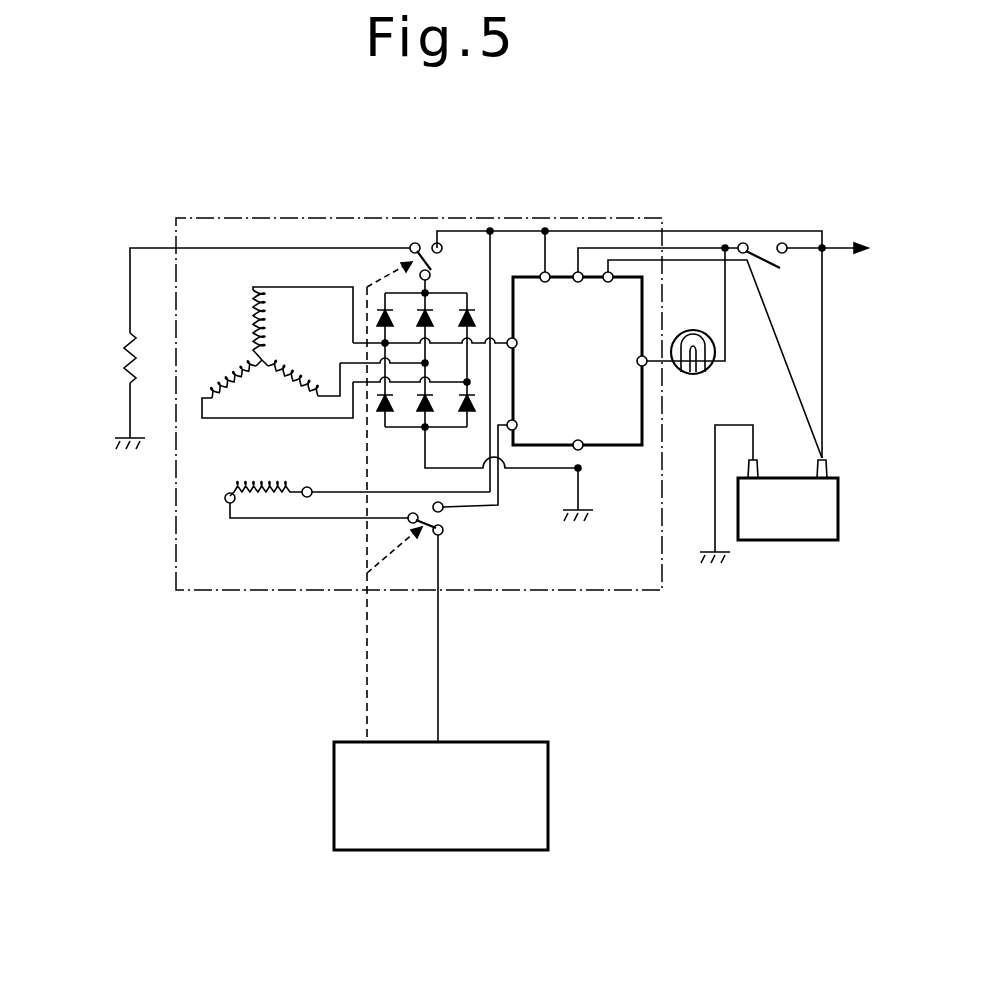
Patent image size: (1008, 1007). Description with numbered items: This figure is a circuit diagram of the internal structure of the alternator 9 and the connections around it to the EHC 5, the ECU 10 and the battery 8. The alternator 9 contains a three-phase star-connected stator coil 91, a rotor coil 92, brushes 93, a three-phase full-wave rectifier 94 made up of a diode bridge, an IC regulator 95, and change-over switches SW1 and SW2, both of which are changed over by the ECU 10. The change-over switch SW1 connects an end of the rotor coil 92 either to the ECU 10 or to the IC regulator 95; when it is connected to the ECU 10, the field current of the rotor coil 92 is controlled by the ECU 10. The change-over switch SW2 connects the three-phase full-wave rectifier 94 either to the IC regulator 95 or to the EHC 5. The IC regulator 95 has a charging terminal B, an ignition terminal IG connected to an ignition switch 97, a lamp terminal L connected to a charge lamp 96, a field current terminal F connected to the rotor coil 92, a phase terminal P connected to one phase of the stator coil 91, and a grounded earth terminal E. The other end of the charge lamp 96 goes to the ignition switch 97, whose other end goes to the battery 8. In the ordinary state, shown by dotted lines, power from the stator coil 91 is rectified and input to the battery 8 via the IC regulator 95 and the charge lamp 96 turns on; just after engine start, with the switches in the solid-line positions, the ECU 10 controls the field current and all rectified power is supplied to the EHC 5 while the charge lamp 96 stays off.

The EHC 5 is at (122, 350).
The battery 8 is at (806, 543).
The alternator 9 is at (324, 218).
The ECU 10 is at (520, 742).
The three-phase star-connected stator coil 91 is at (246, 360).
The rotor coil 92 is at (270, 478).
The brushes 93 is at (226, 501).
The three-phase full-wave rectifier 94 is at (458, 292).
The IC regulator 95 is at (634, 448).
The charge lamp 96 is at (698, 330).
The ignition switch 97 is at (770, 248).
The change-over switch SW1 is at (444, 521).
The change-over switch SW2 is at (422, 243).